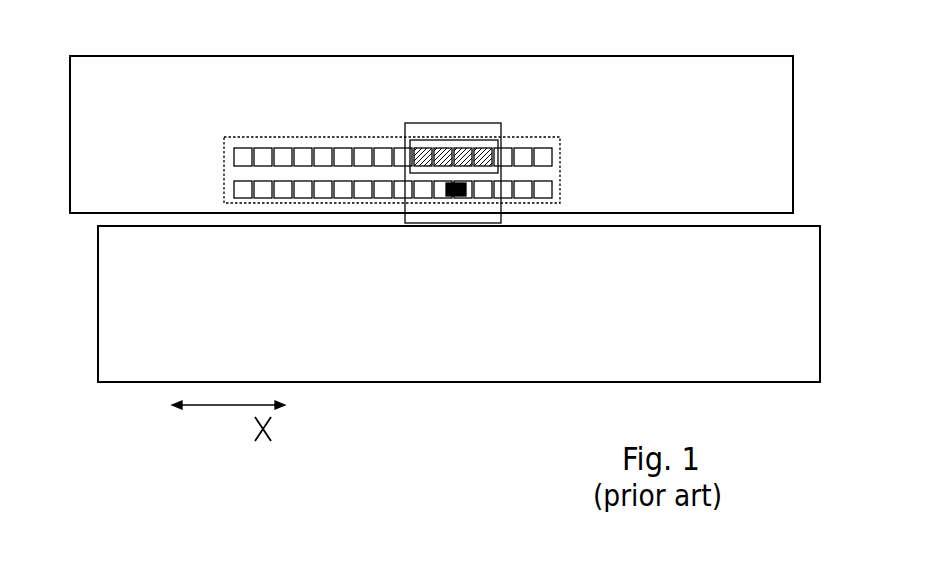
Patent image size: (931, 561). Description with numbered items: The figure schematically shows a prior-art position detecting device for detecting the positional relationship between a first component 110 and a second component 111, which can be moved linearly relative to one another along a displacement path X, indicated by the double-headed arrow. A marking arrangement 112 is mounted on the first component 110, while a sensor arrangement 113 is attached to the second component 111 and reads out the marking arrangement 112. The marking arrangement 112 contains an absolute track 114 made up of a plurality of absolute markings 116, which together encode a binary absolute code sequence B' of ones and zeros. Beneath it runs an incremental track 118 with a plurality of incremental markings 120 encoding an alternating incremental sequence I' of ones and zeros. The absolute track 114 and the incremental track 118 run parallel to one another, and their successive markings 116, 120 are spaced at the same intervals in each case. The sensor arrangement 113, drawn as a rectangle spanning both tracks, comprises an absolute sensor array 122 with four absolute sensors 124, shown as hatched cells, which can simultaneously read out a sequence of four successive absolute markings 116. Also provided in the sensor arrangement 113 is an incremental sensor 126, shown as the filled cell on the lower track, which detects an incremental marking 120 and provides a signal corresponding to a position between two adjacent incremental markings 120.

The first component 110 is at (763, 70).
The second component 111 is at (812, 252).
The marking arrangement 112 is at (557, 141).
The sensor arrangement 113 is at (403, 129).
The absolute track 114 is at (554, 158).
The absolute markings 116 is at (317, 150).
The incremental track 118 is at (554, 190).
The incremental markings 120 is at (517, 198).
The absolute sensor array 122 is at (418, 144).
The absolute sensors 124 is at (428, 144).
The incremental sensor 126 is at (453, 196).